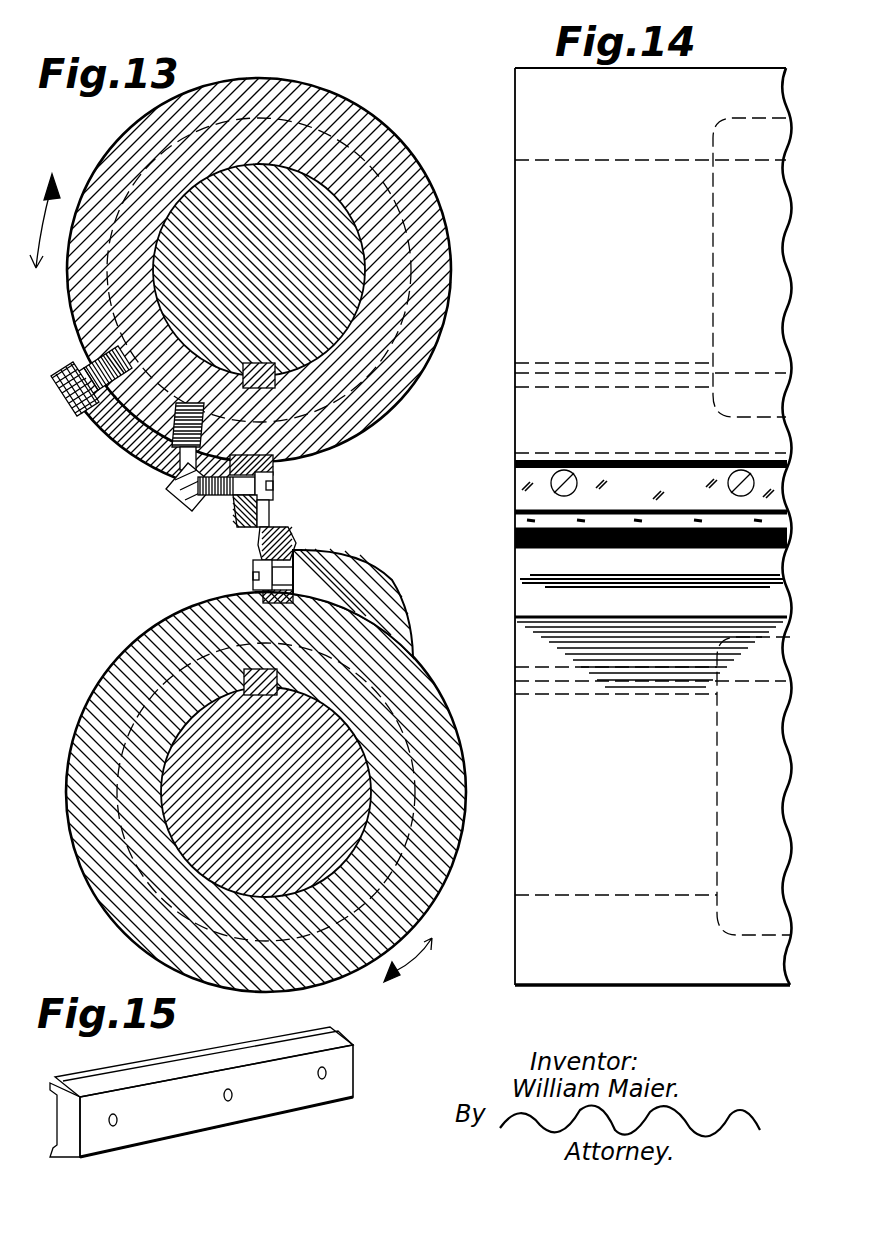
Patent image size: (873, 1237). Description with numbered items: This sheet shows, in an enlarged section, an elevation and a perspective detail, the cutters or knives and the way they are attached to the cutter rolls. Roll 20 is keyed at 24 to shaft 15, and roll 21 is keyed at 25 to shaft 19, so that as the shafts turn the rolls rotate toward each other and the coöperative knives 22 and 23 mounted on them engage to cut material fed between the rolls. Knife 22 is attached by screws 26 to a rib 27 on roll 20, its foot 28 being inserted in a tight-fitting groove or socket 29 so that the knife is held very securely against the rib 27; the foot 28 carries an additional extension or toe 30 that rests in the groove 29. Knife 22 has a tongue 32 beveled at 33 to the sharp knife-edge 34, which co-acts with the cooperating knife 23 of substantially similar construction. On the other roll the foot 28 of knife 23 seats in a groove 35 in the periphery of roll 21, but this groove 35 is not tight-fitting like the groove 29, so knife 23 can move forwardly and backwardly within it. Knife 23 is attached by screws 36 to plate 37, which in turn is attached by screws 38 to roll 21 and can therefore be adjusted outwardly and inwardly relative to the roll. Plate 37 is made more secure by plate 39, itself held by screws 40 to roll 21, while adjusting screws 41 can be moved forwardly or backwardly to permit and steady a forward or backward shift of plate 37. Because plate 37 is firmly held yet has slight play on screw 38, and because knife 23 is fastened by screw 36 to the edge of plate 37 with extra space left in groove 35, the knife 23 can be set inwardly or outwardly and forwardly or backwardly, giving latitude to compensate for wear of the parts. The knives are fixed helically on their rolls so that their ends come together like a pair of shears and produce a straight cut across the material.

In FIG. 13, the shaft 15 is at (266, 792).
In FIG. 14, the shaft 15 is at (555, 895).
In FIG. 13, the shaft 19 is at (317, 217).
In FIG. 14, the shaft 19 is at (540, 160).
In FIG. 13, the roll 20 is at (528, 720).
In FIG. 14, the roll 20 is at (653, 526).
In FIG. 13, the roll 21 is at (513, 95).
In FIG. 13, the knife 22 is at (297, 540).
In FIG. 14, the knife 22 is at (515, 545).
In FIG. 15, the knife 22 is at (201, 1092).
In FIG. 13, the knife 23 is at (183, 520).
In FIG. 14, the knife 23 is at (515, 495).
In FIG. 13, the key 24 is at (276, 695).
In FIG. 14, the key 24 is at (540, 667).
In FIG. 13, the key 25 is at (268, 362).
In FIG. 14, the key 25 is at (557, 363).
In FIG. 13, the screws 26 is at (253, 567).
In FIG. 13, the rib 27 is at (362, 594).
In FIG. 14, the rib 27 is at (651, 631).
In FIG. 13, the foot 28 is at (246, 455).
In FIG. 15, the foot 28 is at (80, 1147).
In FIG. 13, the groove or socket 29 is at (214, 389).
In FIG. 13, the toe 30 is at (268, 458).
In FIG. 15, the toe 30 is at (73, 1162).
In FIG. 13, the tongue 32 is at (280, 527).
In FIG. 15, the tongue 32 is at (50, 1087).
In FIG. 13, the bevel 33 is at (274, 490).
In FIG. 15, the bevel 33 is at (227, 1052).
In FIG. 13, the knife-edge 34 is at (260, 540).
In FIG. 14, the knife-edge 34 is at (515, 525).
In FIG. 15, the knife-edge 34 is at (148, 1064).
In FIG. 13, the groove 35 is at (272, 466).
In FIG. 13, the screws 36 is at (180, 503).
In FIG. 14, the screws 36 is at (728, 484).
In FIG. 13, the plate 37 is at (110, 453).
In FIG. 13, the screws 38 is at (147, 490).
In FIG. 13, the plate 39 is at (58, 386).
In FIG. 13, the screws 40 is at (74, 414).
In FIG. 13, the adjusting screws 41 is at (62, 345).